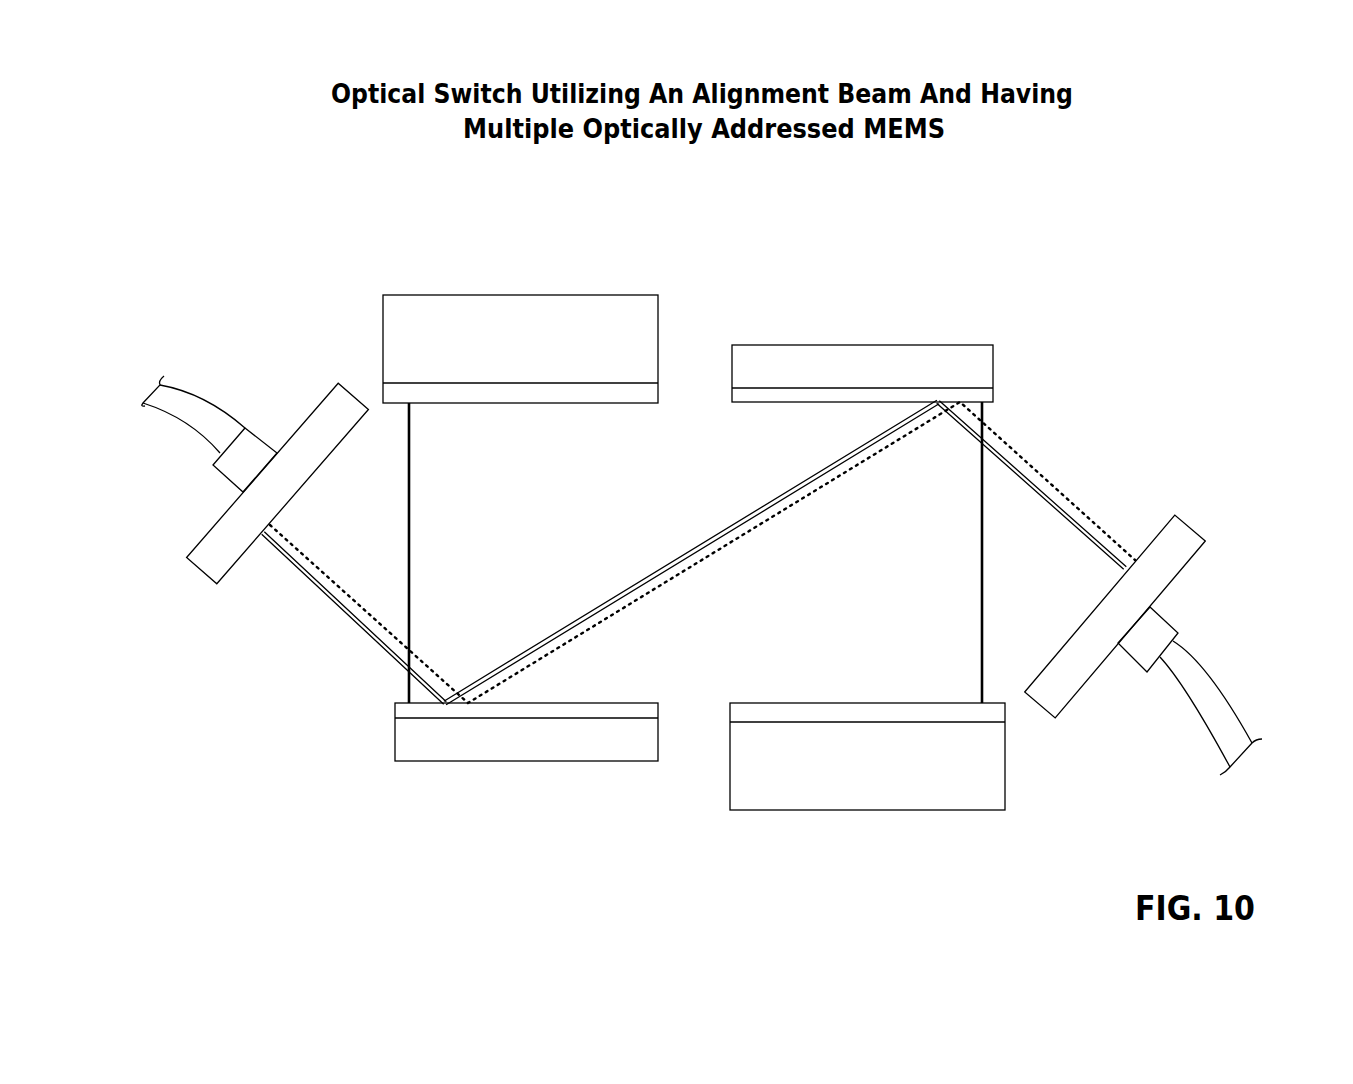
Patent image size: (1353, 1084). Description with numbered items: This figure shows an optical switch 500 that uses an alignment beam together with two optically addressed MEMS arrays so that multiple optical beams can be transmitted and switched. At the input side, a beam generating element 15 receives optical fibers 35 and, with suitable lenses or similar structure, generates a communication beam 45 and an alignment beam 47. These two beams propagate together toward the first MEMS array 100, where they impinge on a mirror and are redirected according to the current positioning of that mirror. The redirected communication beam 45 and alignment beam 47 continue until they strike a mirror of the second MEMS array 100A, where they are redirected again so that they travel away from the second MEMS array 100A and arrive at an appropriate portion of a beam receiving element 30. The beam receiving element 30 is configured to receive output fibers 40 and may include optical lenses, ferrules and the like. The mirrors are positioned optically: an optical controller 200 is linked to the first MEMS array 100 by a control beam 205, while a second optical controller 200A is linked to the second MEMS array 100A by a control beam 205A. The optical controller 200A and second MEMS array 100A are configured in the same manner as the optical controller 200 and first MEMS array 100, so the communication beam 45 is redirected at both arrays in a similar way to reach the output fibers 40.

The optical switch 500 is at (228, 297).
The optical fibers 35 is at (183, 407).
The beam generating element 15 is at (213, 557).
The optical controller 200 is at (653, 316).
The control beam 205 is at (410, 546).
The first MEMS array 100 is at (627, 748).
The second MEMS array 100A is at (996, 360).
The control beam 205A is at (980, 607).
The optical controller 200A is at (968, 802).
The beam receiving element 30 is at (1088, 660).
The output fibers 40 is at (1200, 683).
The communication beam 45 is at (330, 600).
The alignment beam 47 is at (320, 568).